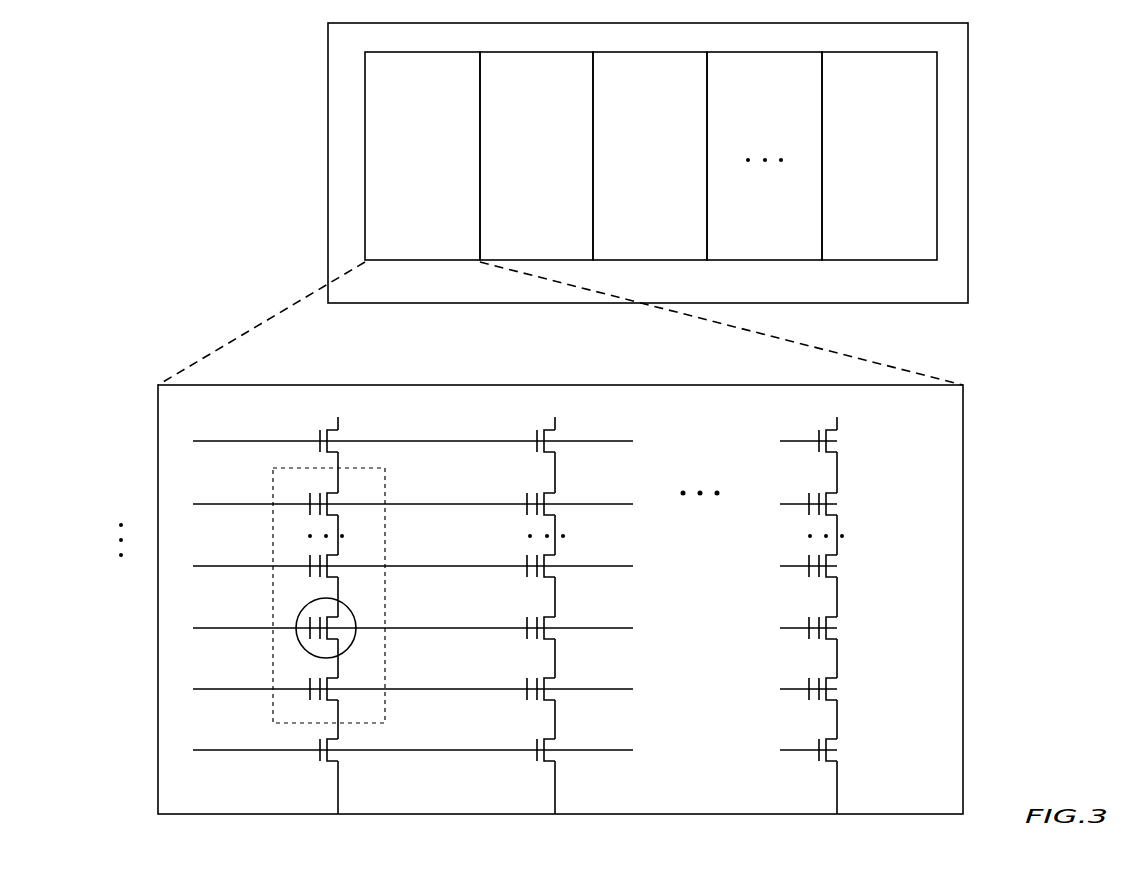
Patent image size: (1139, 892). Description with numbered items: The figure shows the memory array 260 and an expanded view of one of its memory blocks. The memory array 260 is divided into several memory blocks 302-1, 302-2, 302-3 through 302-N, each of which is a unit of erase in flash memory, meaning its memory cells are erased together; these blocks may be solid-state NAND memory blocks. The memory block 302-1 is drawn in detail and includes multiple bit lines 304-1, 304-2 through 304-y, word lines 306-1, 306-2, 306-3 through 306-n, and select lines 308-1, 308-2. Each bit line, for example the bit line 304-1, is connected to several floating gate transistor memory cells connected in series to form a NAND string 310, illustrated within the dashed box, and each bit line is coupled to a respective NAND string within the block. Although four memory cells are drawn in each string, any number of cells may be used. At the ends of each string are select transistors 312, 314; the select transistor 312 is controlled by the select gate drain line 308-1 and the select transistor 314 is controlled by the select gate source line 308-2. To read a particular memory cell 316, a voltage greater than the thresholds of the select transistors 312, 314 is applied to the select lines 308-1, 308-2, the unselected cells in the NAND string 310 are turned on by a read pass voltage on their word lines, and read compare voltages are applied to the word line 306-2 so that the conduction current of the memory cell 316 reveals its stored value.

The memory array 260 is at (968, 42).
The memory block 302-1 is at (449, 147).
The memory block 302-2 is at (563, 147).
The memory block 302-3 is at (677, 147).
The memory block 302-N is at (853, 147).
The bit line 304-1 is at (349, 392).
The bit line 304-2 is at (538, 392).
The bit line 304-y is at (787, 388).
The word line 306-1 is at (158, 677).
The word line 306-2 is at (158, 616).
The word line 306-3 is at (158, 554).
The word line 306-n is at (158, 492).
The select gate drain line (SGD) 308-1 is at (158, 430).
The select gate source line (SGS) 308-2 is at (158, 735).
The NAND string 310 is at (385, 515).
The select transistor 312 is at (318, 438).
The select transistor 314 is at (318, 760).
The memory cell 316 is at (357, 606).